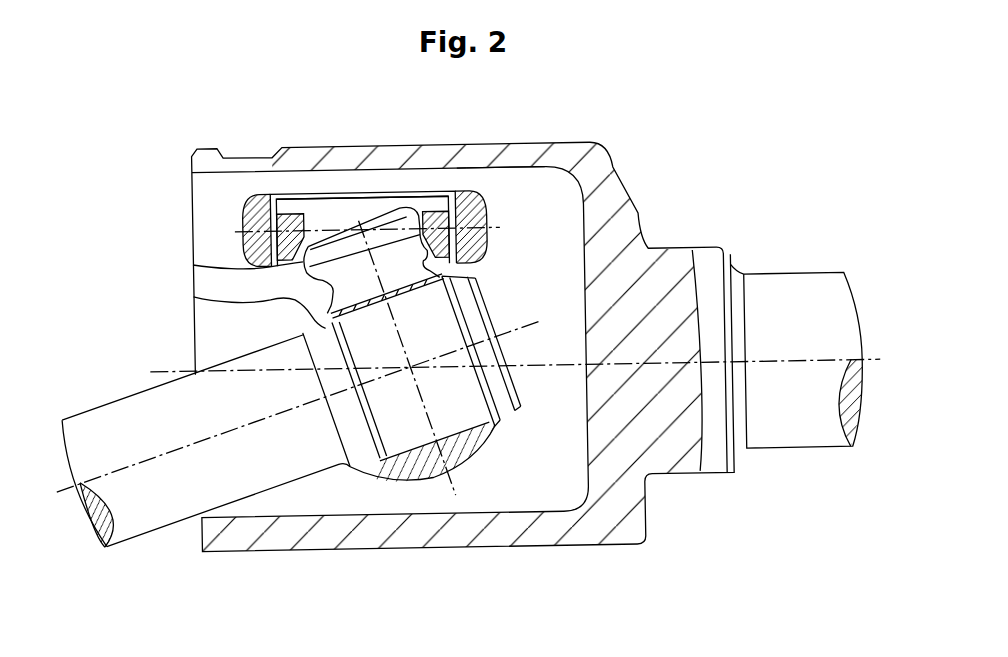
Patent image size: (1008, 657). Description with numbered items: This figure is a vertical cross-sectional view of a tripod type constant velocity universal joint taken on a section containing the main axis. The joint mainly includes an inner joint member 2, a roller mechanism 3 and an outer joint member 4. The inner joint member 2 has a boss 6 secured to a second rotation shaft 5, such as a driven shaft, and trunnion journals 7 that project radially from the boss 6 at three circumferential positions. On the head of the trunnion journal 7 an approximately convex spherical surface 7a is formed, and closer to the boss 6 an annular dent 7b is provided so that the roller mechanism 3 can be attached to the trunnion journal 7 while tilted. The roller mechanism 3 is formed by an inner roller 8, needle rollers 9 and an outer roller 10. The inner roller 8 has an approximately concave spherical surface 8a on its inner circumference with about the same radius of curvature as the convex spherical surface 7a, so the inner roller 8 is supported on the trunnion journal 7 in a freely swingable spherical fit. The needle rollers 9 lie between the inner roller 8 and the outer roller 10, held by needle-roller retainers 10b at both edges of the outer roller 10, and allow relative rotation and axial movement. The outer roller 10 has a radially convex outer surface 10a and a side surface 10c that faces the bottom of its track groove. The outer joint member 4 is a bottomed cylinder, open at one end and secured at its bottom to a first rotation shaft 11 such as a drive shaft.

The inner joint member 2 is at (517, 435).
The roller mechanism 3 is at (504, 180).
The outer joint member 4 is at (618, 190).
The second rotation shaft 5 is at (122, 408).
The boss 6 is at (470, 460).
The trunnion journal 7 is at (384, 219).
The approximately convex spherical surface 7a is at (194, 259).
The annular dent 7b is at (194, 291).
The inner roller 8 is at (297, 218).
The approximately concave spherical surface 8a is at (404, 190).
The needle roller 9 is at (486, 184).
The outer roller 10 is at (484, 210).
The outer surface 10a is at (249, 220).
The needle-roller retainer 10b is at (458, 192).
The side surface 10c is at (288, 186).
The first rotation shaft 11 is at (796, 279).